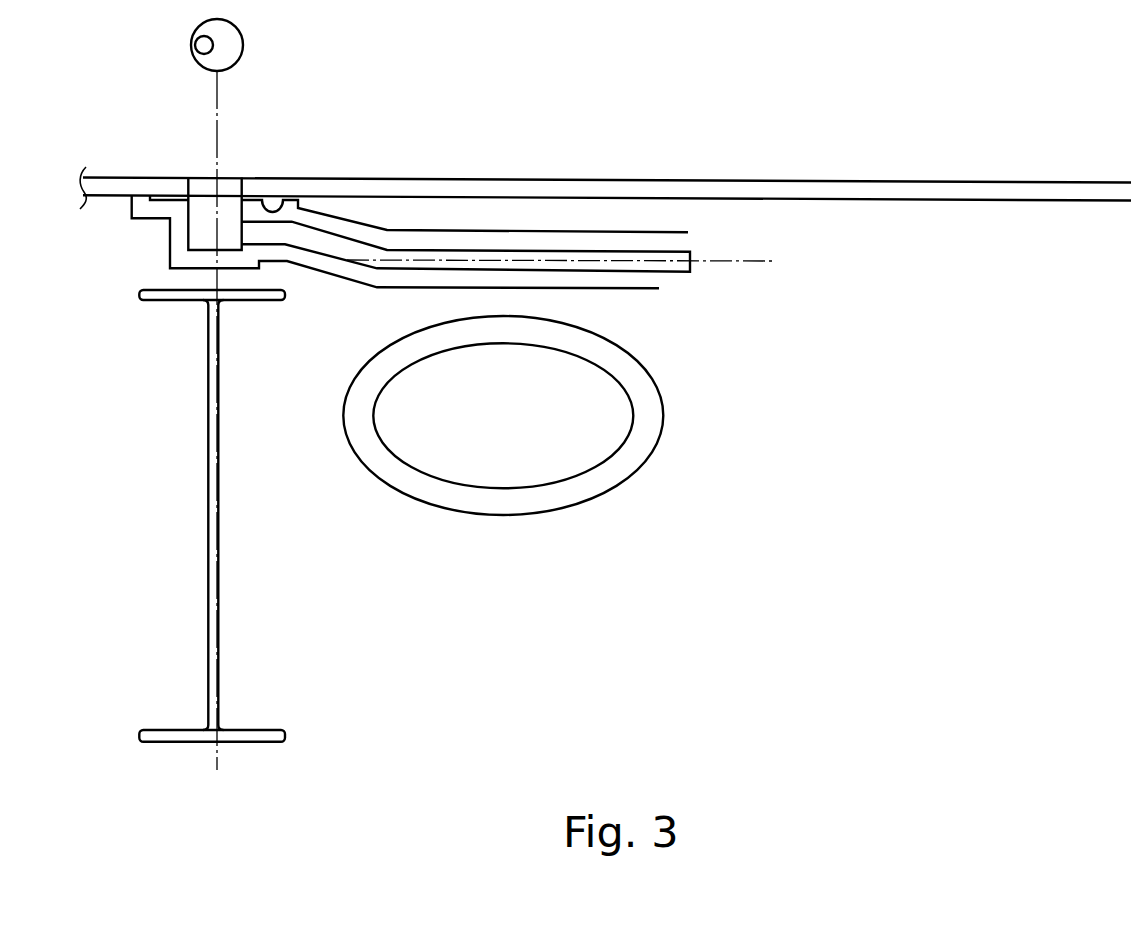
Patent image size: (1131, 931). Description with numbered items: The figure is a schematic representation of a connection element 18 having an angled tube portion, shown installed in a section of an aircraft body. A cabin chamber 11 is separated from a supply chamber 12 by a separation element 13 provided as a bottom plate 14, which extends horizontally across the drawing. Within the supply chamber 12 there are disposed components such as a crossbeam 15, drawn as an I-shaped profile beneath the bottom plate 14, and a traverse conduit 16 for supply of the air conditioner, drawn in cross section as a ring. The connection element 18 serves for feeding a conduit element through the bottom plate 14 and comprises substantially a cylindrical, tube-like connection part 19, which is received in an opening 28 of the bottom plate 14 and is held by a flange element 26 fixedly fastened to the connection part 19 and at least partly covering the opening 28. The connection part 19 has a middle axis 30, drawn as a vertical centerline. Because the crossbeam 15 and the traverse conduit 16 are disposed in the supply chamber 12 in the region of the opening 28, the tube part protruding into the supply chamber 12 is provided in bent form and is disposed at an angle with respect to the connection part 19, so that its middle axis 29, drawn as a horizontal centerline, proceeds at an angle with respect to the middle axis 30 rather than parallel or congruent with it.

The cabin chamber 11 is at (662, 122).
The supply chamber 12 is at (817, 487).
The separation element 13 is at (890, 190).
The bottom plate 14 is at (607, 197).
The crossbeam 15 is at (217, 648).
The traverse conduit 16 is at (552, 497).
The connection element 18 is at (302, 292).
The connection part 19 is at (202, 233).
The flange element 26 is at (273, 213).
The opening 28 is at (195, 183).
The middle axis of the tube part 29 is at (727, 262).
The middle axis of the connection part 30 is at (220, 145).